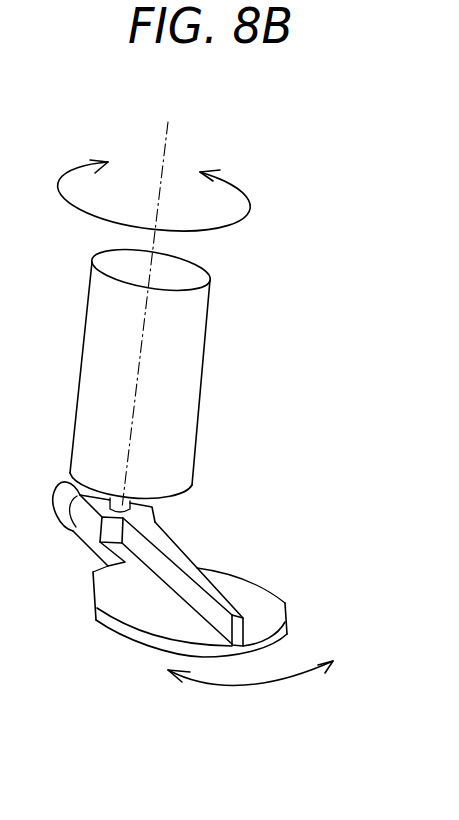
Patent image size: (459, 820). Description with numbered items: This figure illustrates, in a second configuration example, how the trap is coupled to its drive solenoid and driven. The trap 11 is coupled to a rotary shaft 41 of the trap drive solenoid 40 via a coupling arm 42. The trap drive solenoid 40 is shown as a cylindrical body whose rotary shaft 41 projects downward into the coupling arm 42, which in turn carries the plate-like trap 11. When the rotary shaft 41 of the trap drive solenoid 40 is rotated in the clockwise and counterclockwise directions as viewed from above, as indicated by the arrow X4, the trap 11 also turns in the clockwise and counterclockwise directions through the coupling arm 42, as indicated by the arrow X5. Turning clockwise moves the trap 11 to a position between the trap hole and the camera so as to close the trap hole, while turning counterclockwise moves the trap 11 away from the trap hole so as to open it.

The arrow x4 X4 is at (241, 186).
The trap drive solenoid 40 is at (173, 348).
The rotary shaft 41 is at (133, 504).
The coupling arm 42 is at (101, 543).
The trap 11 is at (263, 608).
The arrow x5 X5 is at (290, 682).